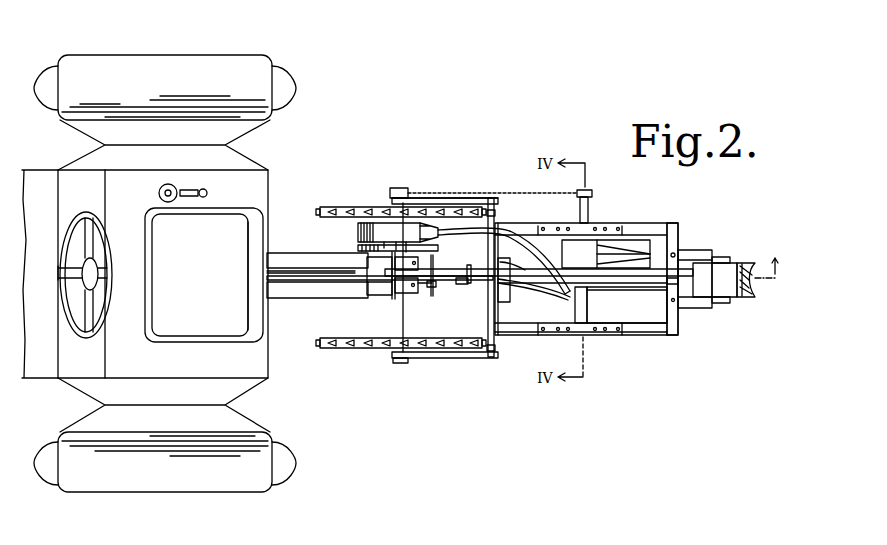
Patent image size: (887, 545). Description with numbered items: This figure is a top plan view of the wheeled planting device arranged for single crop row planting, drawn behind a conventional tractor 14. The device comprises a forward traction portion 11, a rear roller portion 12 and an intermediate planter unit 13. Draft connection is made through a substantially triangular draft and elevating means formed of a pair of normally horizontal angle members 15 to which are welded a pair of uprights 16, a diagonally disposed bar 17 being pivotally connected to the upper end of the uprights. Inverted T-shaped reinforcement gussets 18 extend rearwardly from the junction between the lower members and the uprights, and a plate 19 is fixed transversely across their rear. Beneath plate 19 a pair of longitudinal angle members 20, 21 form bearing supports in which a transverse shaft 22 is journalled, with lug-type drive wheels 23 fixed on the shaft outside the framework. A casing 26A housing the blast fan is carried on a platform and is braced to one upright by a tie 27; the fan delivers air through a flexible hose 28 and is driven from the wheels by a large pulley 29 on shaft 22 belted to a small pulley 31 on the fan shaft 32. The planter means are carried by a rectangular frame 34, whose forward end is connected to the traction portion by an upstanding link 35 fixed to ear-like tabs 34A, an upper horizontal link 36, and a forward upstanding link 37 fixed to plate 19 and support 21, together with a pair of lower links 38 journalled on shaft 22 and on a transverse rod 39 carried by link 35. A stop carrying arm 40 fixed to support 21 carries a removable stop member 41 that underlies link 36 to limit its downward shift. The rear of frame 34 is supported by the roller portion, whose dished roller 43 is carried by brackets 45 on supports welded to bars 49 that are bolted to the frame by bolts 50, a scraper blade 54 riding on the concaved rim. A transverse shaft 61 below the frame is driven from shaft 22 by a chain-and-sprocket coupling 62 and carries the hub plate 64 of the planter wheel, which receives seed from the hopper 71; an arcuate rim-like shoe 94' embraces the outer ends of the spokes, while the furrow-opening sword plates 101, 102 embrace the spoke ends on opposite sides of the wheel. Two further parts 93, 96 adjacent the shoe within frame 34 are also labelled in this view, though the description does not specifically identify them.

The forward traction portion 11 is at (371, 163).
The rear roller portion 12 is at (753, 243).
The intermediate planter unit 13 is at (640, 215).
The tractor 14 is at (291, 145).
The angle members 15 is at (306, 254).
The uprights 16 is at (367, 262).
The diagonally disposed bar 17 is at (316, 279).
The reinforcement gussets 18 is at (387, 289).
The plate 19 is at (392, 299).
The angle member 20 is at (419, 263).
The angle member 21 is at (425, 292).
The transverse shaft 22 is at (404, 326).
The drive wheels 23 is at (341, 208).
The casing 26A is at (357, 232).
The tie 27 is at (389, 250).
The flexible hose 28 is at (527, 254).
The large pulley 29 is at (358, 247).
The small pulley 31 is at (396, 252).
The fan shaft 32 is at (404, 254).
The frame 34 is at (631, 334).
The ear-like tabs 34A is at (498, 287).
The upstanding link 35 is at (473, 272).
The upper substantially horizontal link 36 is at (449, 270).
The forward upstanding link 37 is at (408, 292).
The lower links 38 is at (437, 200).
The transverse rod 39 is at (495, 212).
The stop carrying arm 40 is at (465, 284).
The stop member 41 is at (436, 286).
The roller 43 is at (749, 294).
The brackets 45 is at (723, 258).
The bars 49 is at (690, 252).
The bolts 50 is at (674, 252).
The scraper blade 54 is at (731, 298).
The transverse shaft 61 is at (590, 198).
The chain-and-sprocket coupling 62 is at (478, 193).
The hub plate 64 is at (609, 262).
The hopper 71 is at (606, 254).
The divider 93 is at (575, 308).
The lower block 94' is at (627, 305).
The bearing 96 is at (670, 282).
The plate-like element 101 is at (519, 268).
The plate-like element 102 is at (528, 289).